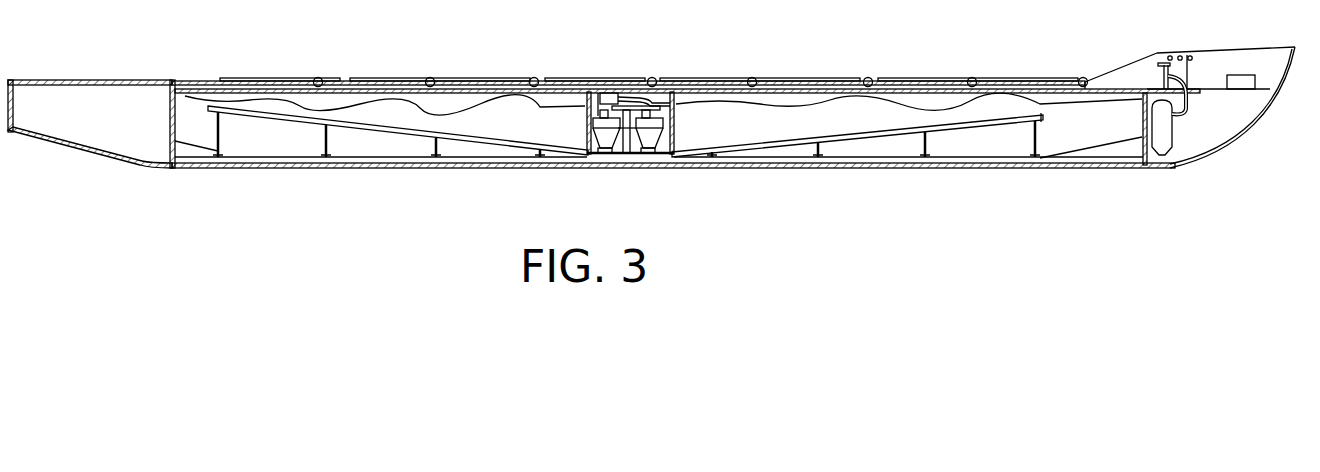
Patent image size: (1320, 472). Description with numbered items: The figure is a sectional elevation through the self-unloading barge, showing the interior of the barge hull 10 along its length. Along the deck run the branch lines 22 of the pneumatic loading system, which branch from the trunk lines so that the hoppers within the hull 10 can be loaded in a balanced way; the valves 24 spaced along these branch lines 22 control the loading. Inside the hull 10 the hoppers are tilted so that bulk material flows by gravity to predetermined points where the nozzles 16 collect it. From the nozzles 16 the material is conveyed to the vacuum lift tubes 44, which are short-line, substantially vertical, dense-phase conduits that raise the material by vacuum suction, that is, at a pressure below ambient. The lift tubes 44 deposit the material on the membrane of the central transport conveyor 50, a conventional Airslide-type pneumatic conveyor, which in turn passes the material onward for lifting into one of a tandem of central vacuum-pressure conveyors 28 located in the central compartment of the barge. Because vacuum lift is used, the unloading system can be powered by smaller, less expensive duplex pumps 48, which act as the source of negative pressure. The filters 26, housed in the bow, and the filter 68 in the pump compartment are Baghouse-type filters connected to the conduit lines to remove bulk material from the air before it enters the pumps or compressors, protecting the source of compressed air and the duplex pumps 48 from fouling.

The barge hull 10 is at (1250, 117).
The nozzles 16 is at (216, 145).
The branch lines 22 is at (222, 83).
The valves 24 is at (318, 78).
The filters 26 is at (1166, 138).
The central vacuum-pressure conveyors 28 is at (603, 141).
The vacuum lift tubes 44 is at (320, 140).
The duplex pumps 48 is at (1243, 76).
The central transport conveyor 50 is at (764, 138).
The filter 68 is at (606, 93).